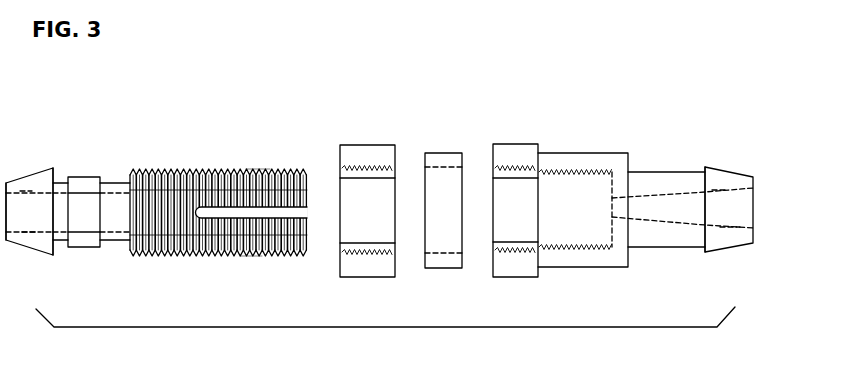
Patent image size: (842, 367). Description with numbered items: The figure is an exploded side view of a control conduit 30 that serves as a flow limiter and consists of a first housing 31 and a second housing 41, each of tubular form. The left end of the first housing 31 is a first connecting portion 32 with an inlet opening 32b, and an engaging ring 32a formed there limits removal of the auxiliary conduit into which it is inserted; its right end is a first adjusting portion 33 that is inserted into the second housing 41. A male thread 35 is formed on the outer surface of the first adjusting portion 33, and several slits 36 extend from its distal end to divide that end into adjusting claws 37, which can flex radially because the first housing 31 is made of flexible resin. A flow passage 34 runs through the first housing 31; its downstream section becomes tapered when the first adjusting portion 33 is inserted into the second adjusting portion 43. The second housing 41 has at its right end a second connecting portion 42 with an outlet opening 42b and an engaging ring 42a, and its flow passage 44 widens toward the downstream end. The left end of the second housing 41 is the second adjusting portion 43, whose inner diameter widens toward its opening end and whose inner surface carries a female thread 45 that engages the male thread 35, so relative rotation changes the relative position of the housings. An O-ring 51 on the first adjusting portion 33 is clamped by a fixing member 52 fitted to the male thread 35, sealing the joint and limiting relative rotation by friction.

The control conduit 30 is at (103, 90).
The first housing 31 is at (131, 143).
The first connecting portion 32 is at (18, 178).
The engaging ring 32a is at (45, 177).
The opening 32b is at (30, 195).
The first adjusting portion 33 is at (185, 170).
The flow passage 34 is at (30, 228).
The male thread 35 is at (258, 170).
The slit 36 is at (302, 212).
The adjusting claw 37 is at (250, 256).
The second housing 41 is at (633, 122).
The second connecting portion 42 is at (741, 172).
The engaging ring 42a is at (710, 170).
The opening 42b is at (724, 191).
The second adjusting portion 43 is at (562, 153).
The flow passage 44 is at (728, 226).
The female thread 45 is at (568, 244).
The O-ring 51 is at (443, 153).
The fixing member 52 is at (368, 145).